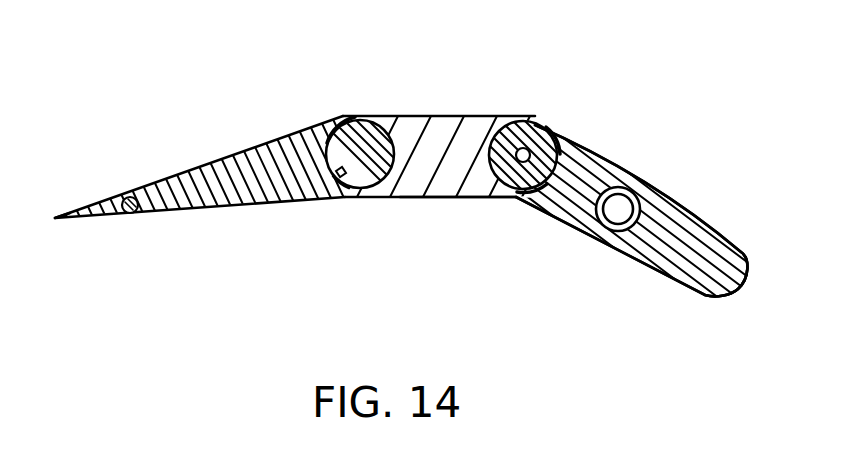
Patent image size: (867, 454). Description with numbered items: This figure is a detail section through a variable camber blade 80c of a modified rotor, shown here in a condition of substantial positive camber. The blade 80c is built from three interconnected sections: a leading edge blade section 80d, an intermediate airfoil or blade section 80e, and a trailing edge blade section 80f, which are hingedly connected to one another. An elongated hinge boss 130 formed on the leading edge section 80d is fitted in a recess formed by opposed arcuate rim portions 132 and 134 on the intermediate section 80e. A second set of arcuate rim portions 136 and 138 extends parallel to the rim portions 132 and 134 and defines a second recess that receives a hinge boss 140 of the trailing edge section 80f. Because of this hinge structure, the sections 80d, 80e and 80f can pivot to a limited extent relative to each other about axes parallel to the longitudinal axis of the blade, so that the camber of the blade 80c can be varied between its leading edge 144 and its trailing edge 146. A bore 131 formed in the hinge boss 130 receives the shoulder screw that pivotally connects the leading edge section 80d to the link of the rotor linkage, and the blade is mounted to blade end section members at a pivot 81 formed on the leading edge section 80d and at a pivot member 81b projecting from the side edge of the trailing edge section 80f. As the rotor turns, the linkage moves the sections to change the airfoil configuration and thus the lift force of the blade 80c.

The variable camber blade 80c is at (702, 203).
The leading edge blade section 80d is at (632, 176).
The intermediate blade section 80e is at (465, 114).
The trailing edge blade section 80f is at (198, 167).
The pivot 81 is at (622, 232).
The pivot member 81b is at (138, 212).
The hinge boss 130 is at (470, 192).
The bore 131 is at (546, 172).
The arcuate rim portion 132 is at (543, 196).
The arcuate rim portion 134 is at (535, 117).
The arcuate rim portion 136 is at (345, 190).
The arcuate rim portion 138 is at (360, 114).
The hinge boss 140 is at (388, 160).
The leading edge 144 is at (732, 292).
The trailing edge 146 is at (56, 222).